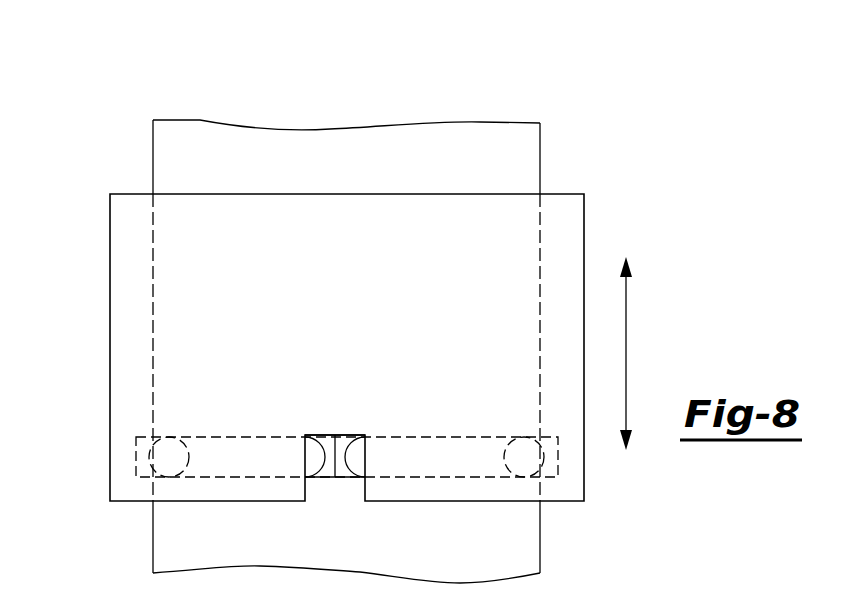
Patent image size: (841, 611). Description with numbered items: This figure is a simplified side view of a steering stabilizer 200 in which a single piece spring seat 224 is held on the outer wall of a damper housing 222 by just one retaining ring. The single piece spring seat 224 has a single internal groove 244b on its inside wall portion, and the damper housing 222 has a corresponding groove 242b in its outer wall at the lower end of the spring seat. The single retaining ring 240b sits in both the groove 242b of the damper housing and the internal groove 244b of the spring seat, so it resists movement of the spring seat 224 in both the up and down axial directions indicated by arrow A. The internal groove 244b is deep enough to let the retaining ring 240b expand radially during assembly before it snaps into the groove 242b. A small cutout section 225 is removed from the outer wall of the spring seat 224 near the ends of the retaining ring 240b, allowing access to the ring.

The steering stabilizer 200 is at (274, 92).
The damper housing 222 is at (548, 157).
The single piece spring seat 224 is at (122, 180).
The single internal groove 244b is at (229, 437).
The groove 242b is at (336, 440).
The single retaining ring 240b is at (356, 450).
The cutout section 225 is at (303, 462).
The arrow A is at (626, 308).